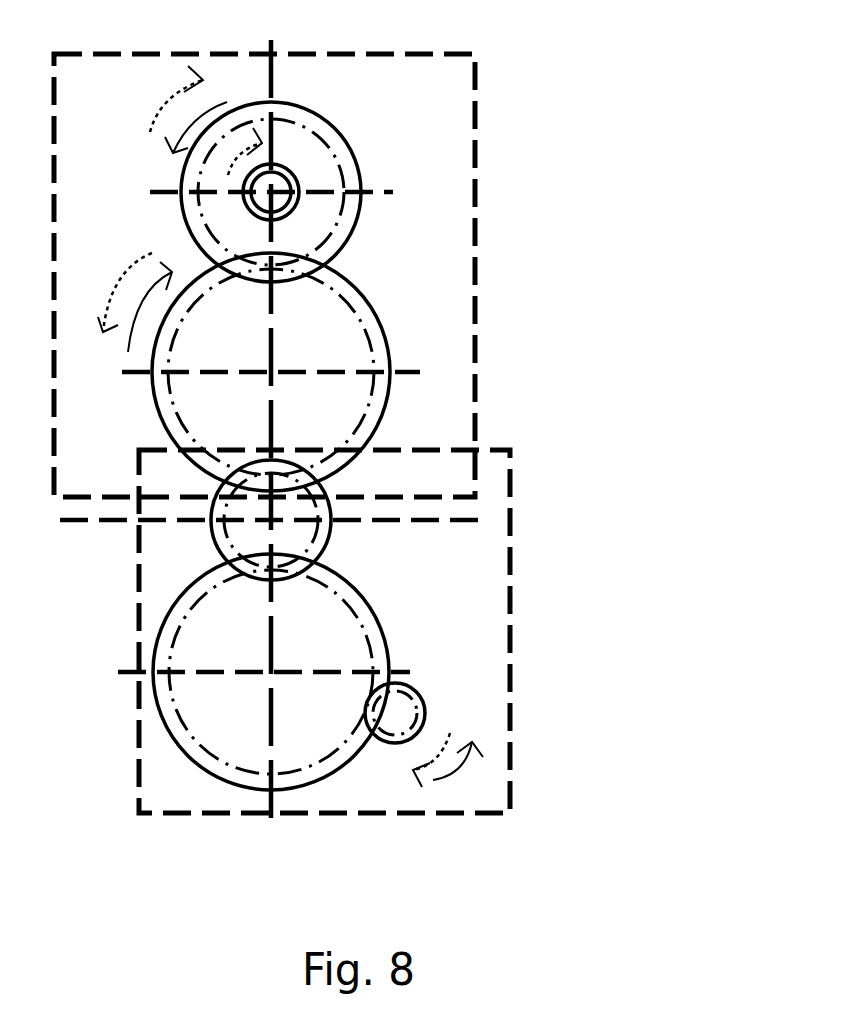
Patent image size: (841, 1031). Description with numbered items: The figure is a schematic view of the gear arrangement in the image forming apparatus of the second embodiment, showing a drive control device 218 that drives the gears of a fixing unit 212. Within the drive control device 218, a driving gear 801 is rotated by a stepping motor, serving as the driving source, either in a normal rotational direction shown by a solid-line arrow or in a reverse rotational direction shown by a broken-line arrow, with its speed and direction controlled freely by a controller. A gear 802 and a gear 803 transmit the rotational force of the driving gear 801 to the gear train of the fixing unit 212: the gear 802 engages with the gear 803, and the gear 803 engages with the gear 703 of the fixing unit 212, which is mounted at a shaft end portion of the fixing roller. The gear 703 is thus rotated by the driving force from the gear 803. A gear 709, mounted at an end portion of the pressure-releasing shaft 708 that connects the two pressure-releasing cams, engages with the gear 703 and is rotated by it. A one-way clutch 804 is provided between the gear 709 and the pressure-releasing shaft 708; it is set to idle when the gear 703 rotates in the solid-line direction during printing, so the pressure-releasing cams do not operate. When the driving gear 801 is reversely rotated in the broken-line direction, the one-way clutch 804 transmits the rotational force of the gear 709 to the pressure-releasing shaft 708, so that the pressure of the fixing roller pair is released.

The fixing unit 212 is at (476, 342).
The drive control device 218 is at (512, 750).
The pressure-releasing shaft 708 is at (298, 177).
The gear 709 is at (330, 173).
The one-way clutch 804 is at (292, 218).
The gear 703 is at (332, 330).
The gear 803 is at (293, 505).
The gear 802 is at (343, 623).
The driving gear 801 is at (400, 717).